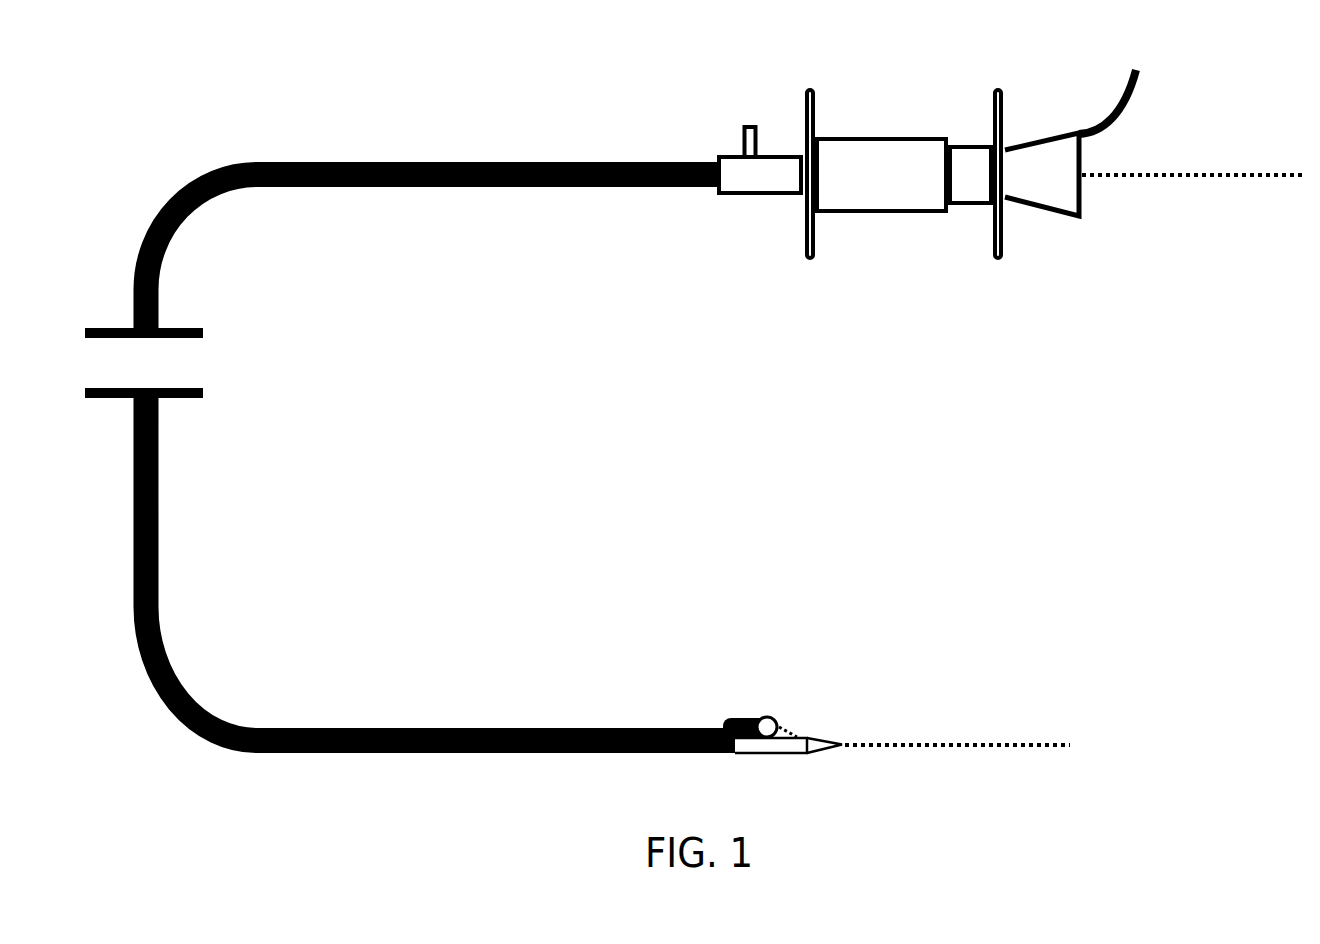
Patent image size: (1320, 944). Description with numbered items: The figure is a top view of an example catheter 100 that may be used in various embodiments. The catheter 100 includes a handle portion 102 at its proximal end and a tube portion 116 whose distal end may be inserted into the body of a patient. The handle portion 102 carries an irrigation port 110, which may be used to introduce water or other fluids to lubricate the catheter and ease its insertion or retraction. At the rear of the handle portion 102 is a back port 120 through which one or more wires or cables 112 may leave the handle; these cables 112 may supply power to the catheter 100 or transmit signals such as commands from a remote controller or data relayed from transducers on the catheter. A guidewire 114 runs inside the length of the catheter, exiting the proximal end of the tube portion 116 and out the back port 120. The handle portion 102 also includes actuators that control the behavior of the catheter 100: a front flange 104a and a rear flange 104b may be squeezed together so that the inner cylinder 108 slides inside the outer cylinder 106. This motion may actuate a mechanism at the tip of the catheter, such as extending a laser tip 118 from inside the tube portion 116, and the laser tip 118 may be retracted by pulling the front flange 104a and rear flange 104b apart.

The catheter 100 is at (695, 402).
The handle portion 102 is at (870, 198).
The front flange 104a is at (815, 265).
The rear flange 104b is at (1000, 265).
The outer cylinder 106 is at (877, 136).
The inner cylinder 108 is at (967, 145).
The irrigation port 110 is at (746, 124).
The cables 112 is at (1118, 100).
The guidewire 114 is at (1240, 173).
The tube portion 116 is at (388, 162).
The laser tip 118 is at (776, 718).
The back port 120 is at (1078, 220).